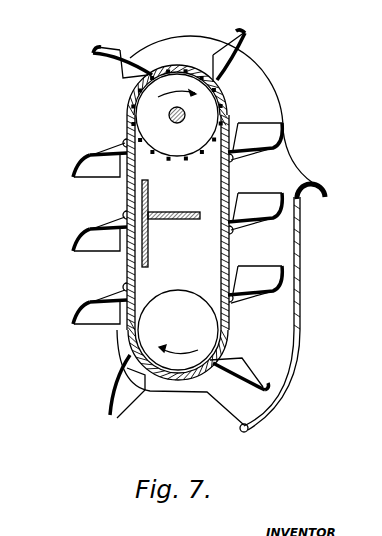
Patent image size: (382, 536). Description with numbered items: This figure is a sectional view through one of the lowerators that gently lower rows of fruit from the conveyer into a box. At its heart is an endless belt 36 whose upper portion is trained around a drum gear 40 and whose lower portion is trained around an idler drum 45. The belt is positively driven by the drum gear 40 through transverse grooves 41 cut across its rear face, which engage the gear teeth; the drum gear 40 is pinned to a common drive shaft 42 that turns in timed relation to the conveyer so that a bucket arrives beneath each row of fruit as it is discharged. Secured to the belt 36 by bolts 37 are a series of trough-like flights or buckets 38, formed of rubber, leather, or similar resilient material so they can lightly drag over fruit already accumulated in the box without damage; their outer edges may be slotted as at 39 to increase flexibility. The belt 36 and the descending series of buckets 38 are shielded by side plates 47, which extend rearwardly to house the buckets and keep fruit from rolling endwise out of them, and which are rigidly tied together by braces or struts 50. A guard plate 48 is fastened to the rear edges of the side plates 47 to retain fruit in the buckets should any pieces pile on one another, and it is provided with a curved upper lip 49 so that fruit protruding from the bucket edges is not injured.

The endless belt 36 is at (232, 108).
The bolts 37 is at (124, 142).
The trough like flights or buckets 38 is at (90, 155).
The slots 39 is at (76, 173).
The drum gear 40 is at (158, 77).
The transverse grooves 41 is at (230, 177).
The drive shaft 42 is at (168, 114).
The idler drum 45 is at (198, 297).
The side plates 47 is at (192, 385).
The guard plate 48 is at (300, 287).
The curved upper lip 49 is at (313, 182).
The braces or struts 50 is at (160, 213).